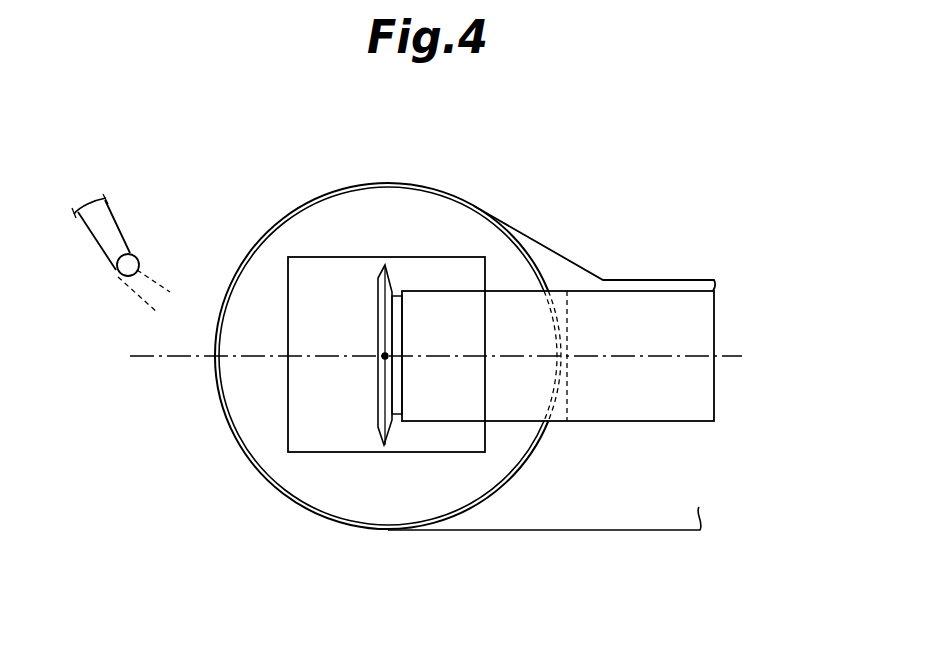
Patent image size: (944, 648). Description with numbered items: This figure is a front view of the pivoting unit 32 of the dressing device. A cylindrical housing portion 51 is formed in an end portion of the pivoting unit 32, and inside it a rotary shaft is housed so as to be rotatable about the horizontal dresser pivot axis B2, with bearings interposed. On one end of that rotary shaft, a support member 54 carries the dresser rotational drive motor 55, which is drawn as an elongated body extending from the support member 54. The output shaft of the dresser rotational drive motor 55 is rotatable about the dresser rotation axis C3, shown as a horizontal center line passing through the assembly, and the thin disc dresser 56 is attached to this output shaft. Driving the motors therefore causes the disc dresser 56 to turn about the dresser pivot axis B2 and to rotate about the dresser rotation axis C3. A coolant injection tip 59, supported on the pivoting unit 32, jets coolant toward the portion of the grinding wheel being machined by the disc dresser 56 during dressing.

The housing portion 51 is at (310, 202).
The support member 54 is at (363, 264).
The pivoting unit 32 is at (583, 251).
The coolant injection tip 59 is at (137, 257).
The dresser rotational drive motor 55 is at (703, 393).
The disc dresser 56 is at (377, 395).
The dresser pivot axis B2 is at (384, 356).
The dresser rotation axis C3 is at (415, 357).